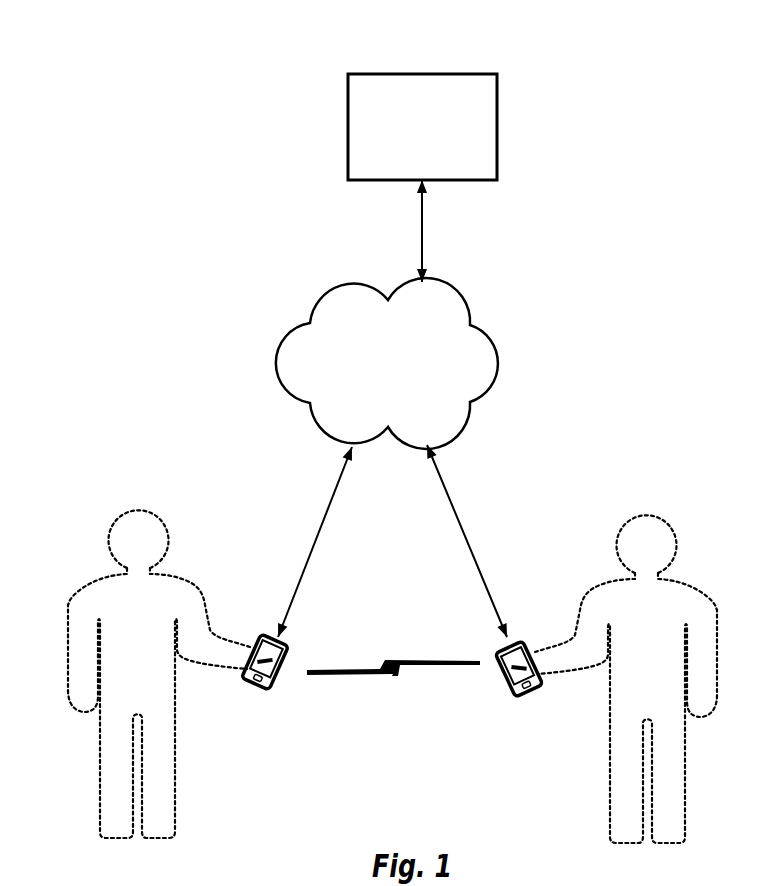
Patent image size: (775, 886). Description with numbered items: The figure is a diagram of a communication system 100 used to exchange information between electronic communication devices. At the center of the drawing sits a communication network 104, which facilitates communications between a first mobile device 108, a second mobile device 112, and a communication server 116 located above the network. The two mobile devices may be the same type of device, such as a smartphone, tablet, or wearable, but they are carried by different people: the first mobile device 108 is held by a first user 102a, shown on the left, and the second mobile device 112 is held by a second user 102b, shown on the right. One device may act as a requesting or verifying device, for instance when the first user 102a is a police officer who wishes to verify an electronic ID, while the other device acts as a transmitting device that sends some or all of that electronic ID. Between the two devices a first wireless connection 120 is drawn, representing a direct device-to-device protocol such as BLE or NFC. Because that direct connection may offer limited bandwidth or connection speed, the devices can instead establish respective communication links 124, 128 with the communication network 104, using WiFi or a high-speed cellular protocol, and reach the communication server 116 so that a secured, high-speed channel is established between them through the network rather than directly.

The communication system 100 is at (96, 217).
The communication server 116 is at (425, 74).
The communication network 104 is at (502, 367).
The first user 102a is at (126, 513).
The second user 102b is at (663, 522).
The first mobile device 108 is at (253, 691).
The second mobile device 112 is at (532, 696).
The communication link 124 is at (306, 562).
The communication link 128 is at (465, 535).
The first wireless connection 120 is at (372, 677).